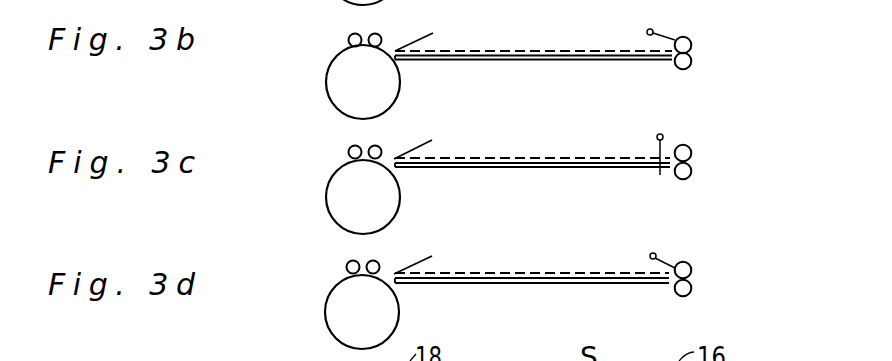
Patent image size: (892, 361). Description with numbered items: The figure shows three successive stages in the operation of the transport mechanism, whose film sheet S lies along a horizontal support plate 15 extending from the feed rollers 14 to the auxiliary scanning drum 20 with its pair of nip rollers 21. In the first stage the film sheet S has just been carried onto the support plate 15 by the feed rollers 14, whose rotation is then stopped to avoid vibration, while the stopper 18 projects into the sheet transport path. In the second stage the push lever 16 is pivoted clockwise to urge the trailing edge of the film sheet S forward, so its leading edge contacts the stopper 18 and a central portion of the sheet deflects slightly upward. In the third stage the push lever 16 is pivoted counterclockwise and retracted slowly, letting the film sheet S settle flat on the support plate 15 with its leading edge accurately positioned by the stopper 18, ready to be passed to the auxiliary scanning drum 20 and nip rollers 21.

In FIG. 3b, the feed rollers 14 is at (691, 62).
In FIG. 3c, the feed rollers 14 is at (691, 173).
In FIG. 3d, the feed rollers 14 is at (691, 290).
In FIG. 3b, the support plate 15 is at (557, 60).
In FIG. 3c, the support plate 15 is at (540, 168).
In FIG. 3d, the support plate 15 is at (540, 284).
In FIG. 3b, the push lever 16 is at (664, 31).
In FIG. 3c, the push lever 16 is at (662, 143).
In FIG. 3d, the push lever 16 is at (661, 263).
In FIG. 3b, the stopper 18 is at (411, 40).
In FIG. 3c, the stopper 18 is at (414, 143).
In FIG. 3d, the stopper 18 is at (414, 260).
In FIG. 3b, the auxiliary scanning drum 20 is at (400, 77).
In FIG. 3c, the auxiliary scanning drum 20 is at (400, 188).
In FIG. 3d, the auxiliary scanning drum 20 is at (399, 305).
In FIG. 3b, the nip rollers 21 is at (375, 34).
In FIG. 3c, the nip rollers 21 is at (375, 146).
In FIG. 3d, the nip rollers 21 is at (373, 261).
In FIG. 3b, the film sheet S is at (573, 50).
In FIG. 3c, the film sheet S is at (563, 158).
In FIG. 3d, the film sheet S is at (563, 273).